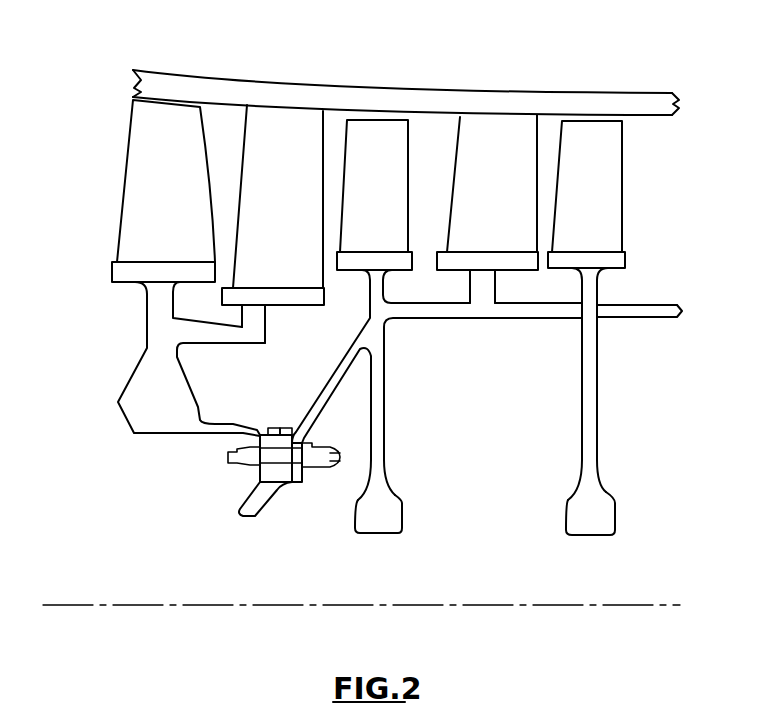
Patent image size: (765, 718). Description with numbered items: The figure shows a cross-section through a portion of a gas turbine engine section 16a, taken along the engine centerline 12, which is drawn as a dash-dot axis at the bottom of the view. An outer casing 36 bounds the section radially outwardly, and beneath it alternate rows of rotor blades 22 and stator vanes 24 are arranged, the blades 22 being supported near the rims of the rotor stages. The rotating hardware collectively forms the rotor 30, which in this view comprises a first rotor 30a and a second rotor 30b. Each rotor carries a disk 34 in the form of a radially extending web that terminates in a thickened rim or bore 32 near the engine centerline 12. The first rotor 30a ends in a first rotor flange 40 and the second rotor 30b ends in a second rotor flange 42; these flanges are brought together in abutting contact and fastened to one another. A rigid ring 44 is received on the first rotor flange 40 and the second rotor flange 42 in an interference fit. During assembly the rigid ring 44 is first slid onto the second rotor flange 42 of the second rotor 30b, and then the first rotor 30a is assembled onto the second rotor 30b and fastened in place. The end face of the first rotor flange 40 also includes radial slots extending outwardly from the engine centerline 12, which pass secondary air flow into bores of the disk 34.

The engine centerline 12 is at (84, 605).
The turbine section 16a is at (600, 58).
The blades 22 is at (177, 226).
The stator vanes 24 is at (294, 201).
The rotor disk 30 is at (122, 445).
The first rotor 30a is at (118, 402).
The second rotor 30b is at (387, 349).
The disk rim / bore 32 is at (583, 503).
The disk 34 is at (590, 458).
The outer casing 36 is at (280, 97).
The first rotor flange 40 is at (270, 486).
The second rotor flange 42 is at (298, 484).
The rigid ring 44 is at (277, 428).